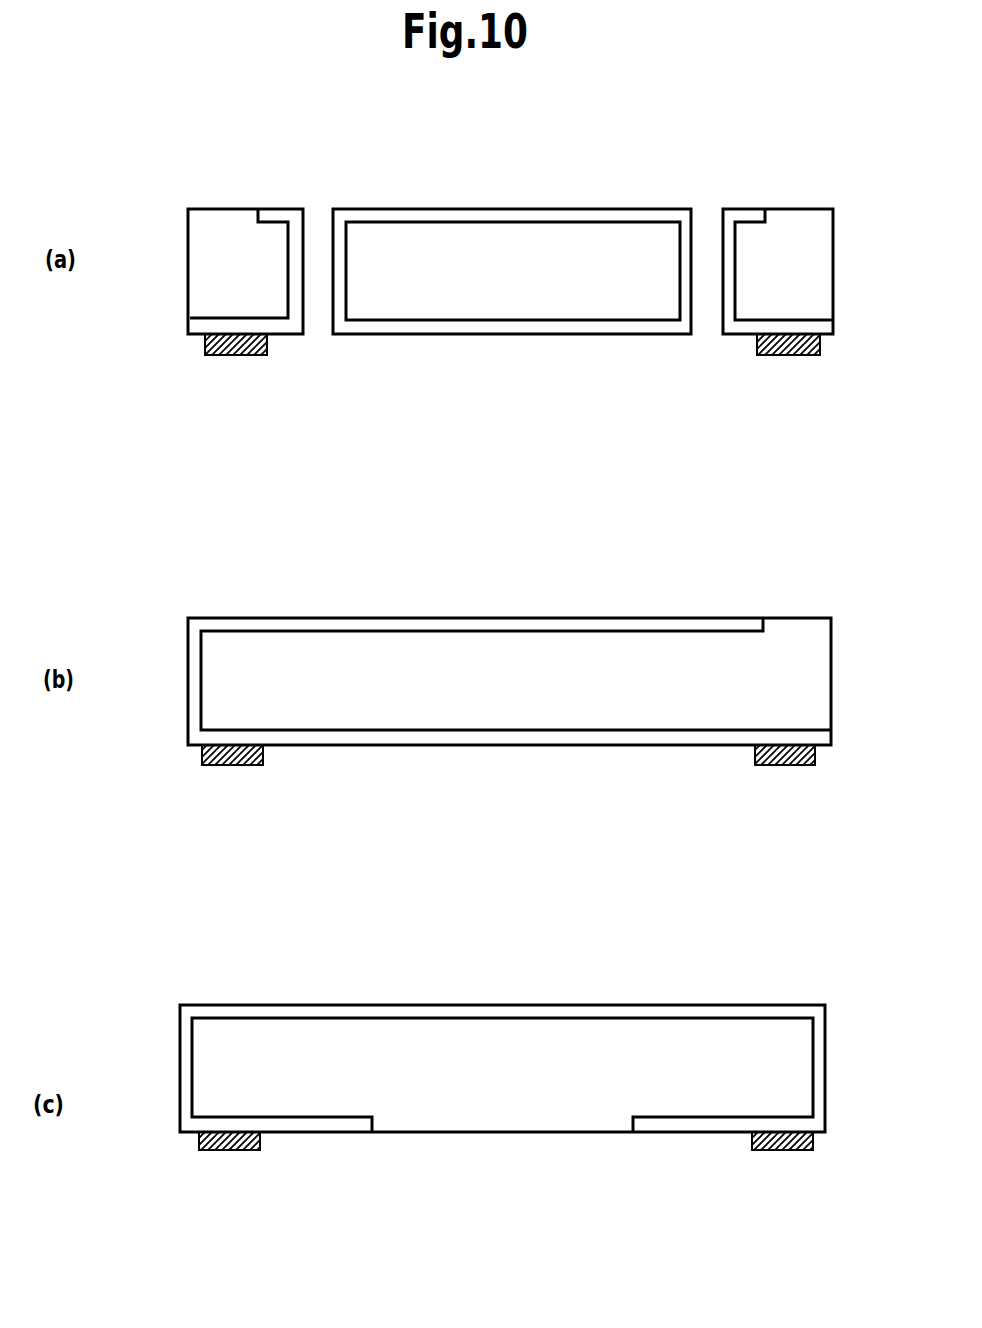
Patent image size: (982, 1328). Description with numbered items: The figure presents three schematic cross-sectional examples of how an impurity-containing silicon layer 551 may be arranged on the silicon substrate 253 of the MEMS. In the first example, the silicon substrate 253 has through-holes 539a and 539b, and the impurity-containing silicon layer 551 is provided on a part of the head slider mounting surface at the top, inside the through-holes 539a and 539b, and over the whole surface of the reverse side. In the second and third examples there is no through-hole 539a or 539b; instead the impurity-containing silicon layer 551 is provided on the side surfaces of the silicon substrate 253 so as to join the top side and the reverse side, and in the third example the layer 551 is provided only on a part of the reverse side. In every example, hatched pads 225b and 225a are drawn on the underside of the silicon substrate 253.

The through-hole 539b is at (316, 213).
The through-hole 539a is at (703, 213).
The impurity-containing silicon layer 551 is at (497, 209).
The silicon substrate 253 is at (530, 286).
The connection pad 225b is at (268, 343).
The connection pad 225a is at (757, 338).